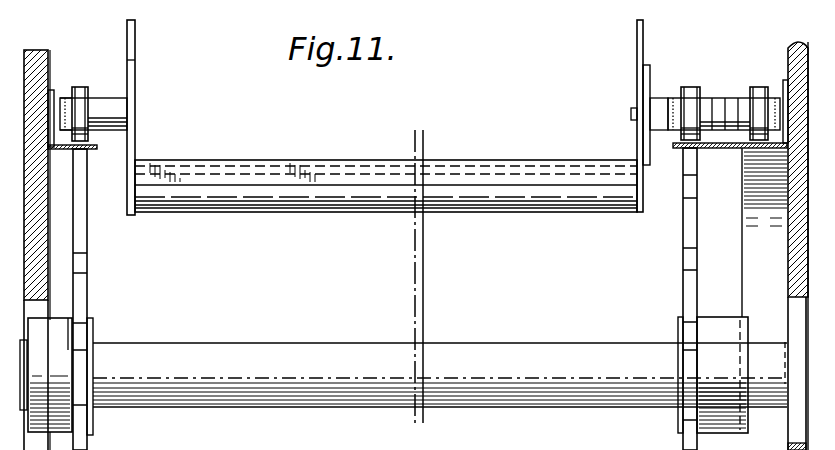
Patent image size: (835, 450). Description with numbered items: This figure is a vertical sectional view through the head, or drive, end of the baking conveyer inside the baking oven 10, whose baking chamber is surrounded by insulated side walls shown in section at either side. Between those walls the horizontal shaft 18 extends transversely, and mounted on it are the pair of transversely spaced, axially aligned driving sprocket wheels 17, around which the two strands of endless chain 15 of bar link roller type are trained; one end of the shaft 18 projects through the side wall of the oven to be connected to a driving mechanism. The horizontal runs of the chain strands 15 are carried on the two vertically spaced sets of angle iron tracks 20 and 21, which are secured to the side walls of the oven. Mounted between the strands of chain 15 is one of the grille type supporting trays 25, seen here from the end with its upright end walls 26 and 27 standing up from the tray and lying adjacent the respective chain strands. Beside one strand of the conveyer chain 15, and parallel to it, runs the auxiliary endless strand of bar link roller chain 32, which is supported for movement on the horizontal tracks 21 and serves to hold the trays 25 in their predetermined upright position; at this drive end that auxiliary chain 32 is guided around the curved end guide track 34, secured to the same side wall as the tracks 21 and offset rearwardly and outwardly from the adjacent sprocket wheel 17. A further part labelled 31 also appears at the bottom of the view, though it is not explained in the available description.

The baking oven 10 is at (782, 48).
The endless chain 15 is at (68, 87).
The driving sprocket wheels 17 is at (88, 284).
The horizontal shaft 18 is at (353, 321).
The angle iron tracks 20 is at (97, 150).
The angle iron tracks 21 is at (724, 149).
The supporting trays 25 is at (311, 157).
The upright end wall 26 is at (137, 75).
The upright end wall 27 is at (637, 47).
The bearing 31 is at (631, 444).
The auxiliary strand of chain 32 is at (749, 89).
The curved end guide track 34 is at (752, 255).